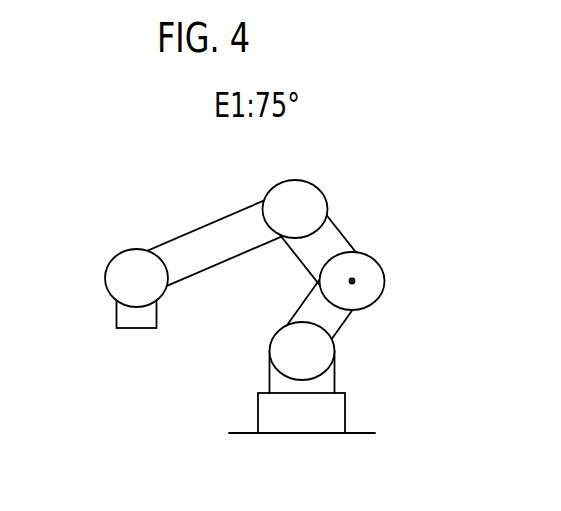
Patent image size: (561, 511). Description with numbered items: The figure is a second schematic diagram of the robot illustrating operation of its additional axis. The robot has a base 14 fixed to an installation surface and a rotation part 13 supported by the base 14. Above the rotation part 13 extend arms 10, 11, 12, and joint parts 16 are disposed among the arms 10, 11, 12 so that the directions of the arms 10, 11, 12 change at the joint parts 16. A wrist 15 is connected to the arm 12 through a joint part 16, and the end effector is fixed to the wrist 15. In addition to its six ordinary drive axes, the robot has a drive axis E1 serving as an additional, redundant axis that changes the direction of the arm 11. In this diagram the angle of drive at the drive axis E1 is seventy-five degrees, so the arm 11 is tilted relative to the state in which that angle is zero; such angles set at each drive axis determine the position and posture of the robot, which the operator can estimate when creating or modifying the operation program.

The arm 10 is at (343, 322).
The arm 11 is at (338, 237).
The arm 12 is at (205, 237).
The rotation part 13 is at (280, 382).
The base 14 is at (267, 417).
The wrist 15 is at (127, 313).
The joint part 16 is at (122, 272).
The drive axis E1 is at (355, 281).